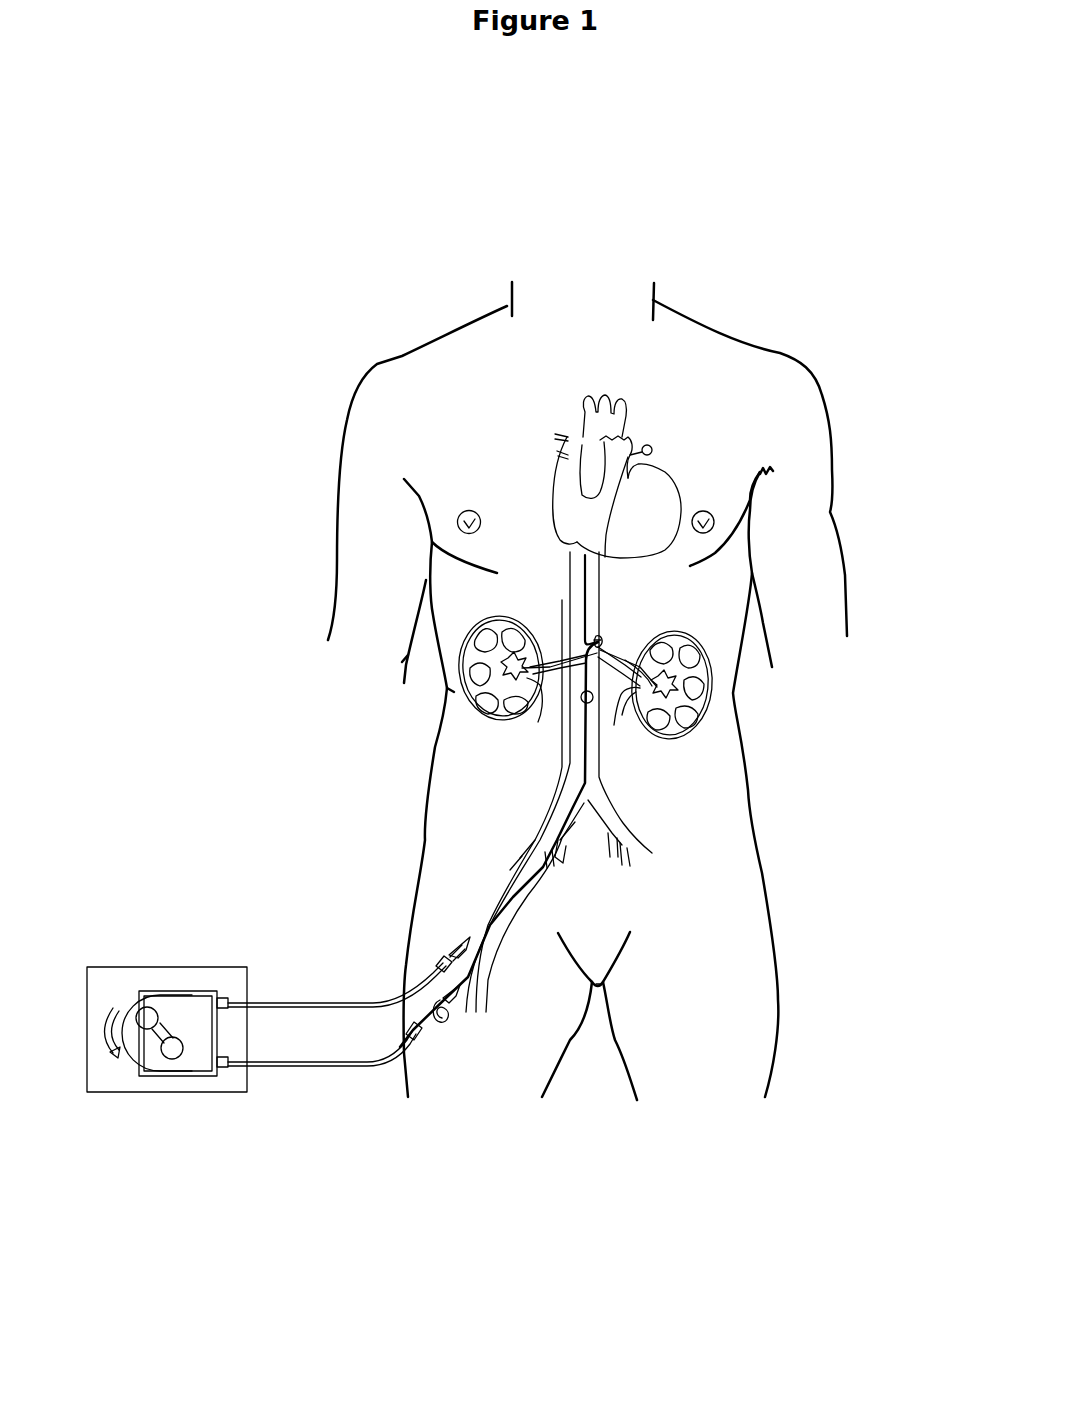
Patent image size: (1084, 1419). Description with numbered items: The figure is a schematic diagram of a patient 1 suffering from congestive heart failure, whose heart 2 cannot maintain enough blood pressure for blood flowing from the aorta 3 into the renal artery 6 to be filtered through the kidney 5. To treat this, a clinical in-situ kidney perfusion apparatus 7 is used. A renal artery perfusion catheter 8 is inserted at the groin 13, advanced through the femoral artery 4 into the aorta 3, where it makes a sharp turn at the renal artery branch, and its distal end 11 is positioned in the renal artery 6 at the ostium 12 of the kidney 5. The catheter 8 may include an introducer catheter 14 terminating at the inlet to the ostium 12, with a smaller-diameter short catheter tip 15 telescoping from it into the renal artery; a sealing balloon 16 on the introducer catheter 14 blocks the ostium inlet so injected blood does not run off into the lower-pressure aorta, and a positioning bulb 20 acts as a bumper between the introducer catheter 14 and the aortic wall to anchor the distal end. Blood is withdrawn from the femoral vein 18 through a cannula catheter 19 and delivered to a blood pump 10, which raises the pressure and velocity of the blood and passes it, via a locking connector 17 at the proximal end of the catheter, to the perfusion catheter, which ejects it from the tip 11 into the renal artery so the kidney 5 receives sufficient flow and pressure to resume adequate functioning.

The patient 1 is at (516, 387).
The heart 2 is at (617, 492).
The aorta 3 is at (585, 694).
The femoral artery 4 is at (530, 856).
The kidney 5 is at (688, 685).
The renal artery 6 is at (632, 648).
The perfusion apparatus 7 is at (118, 1078).
The renal artery perfusion catheter 8 is at (580, 805).
The blood pump 10 is at (168, 1015).
The distal end 11 is at (597, 644).
The ostium 12 is at (610, 665).
The groin 13 is at (600, 988).
The introducer catheter 14 is at (562, 835).
The catheter tip 15 is at (630, 665).
The sealing balloon 16 is at (598, 646).
The locking connector 17 is at (410, 981).
The femoral vein 18 is at (518, 870).
The cannula catheter 19 is at (483, 917).
The positioning bulb 20 is at (585, 697).